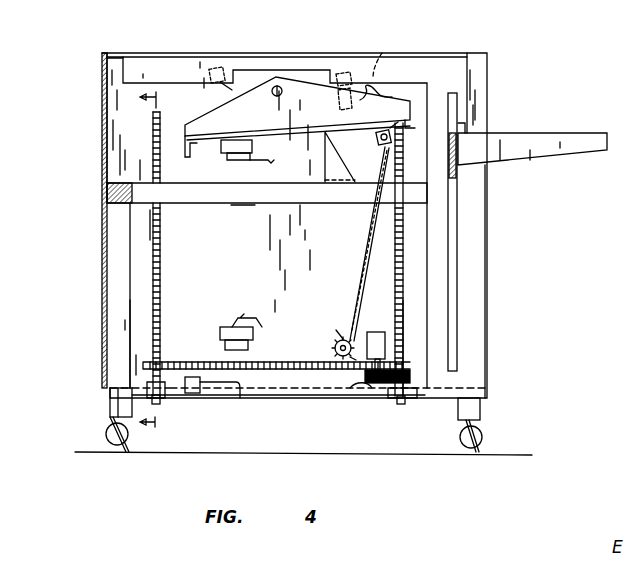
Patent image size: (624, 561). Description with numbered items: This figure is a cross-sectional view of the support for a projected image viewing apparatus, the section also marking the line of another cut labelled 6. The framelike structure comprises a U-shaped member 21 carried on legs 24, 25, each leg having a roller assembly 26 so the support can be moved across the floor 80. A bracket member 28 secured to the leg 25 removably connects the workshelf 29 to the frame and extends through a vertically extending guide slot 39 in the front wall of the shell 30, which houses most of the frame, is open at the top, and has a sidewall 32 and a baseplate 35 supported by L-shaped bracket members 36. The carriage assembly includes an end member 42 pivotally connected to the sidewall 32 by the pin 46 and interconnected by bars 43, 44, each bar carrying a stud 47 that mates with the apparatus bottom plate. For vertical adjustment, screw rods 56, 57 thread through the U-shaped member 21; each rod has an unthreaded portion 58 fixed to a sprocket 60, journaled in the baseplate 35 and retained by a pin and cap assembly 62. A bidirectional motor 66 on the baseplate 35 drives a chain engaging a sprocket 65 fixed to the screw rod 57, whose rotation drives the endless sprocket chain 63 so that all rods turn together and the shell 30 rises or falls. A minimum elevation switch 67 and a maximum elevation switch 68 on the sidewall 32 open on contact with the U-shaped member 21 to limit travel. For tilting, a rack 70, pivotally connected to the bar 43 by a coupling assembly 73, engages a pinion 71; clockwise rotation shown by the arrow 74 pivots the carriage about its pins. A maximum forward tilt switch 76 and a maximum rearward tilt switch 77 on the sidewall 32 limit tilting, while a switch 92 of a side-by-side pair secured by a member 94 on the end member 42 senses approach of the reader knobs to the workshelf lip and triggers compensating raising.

The shell 30 is at (101, 61).
The U-shaped member 21 is at (236, 193).
The sidewall 32 is at (254, 240).
The screw rod 56 is at (160, 260).
The screw rod 57 is at (404, 275).
The end member 42 is at (256, 117).
The bar 43 is at (412, 128).
The bar 44 is at (188, 150).
The pin 46 is at (277, 85).
The stud 47 is at (372, 88).
The minimum elevation switch 67 is at (252, 147).
The coupling assembly 73 is at (379, 140).
The member 94 is at (325, 164).
The maximum forward tilt switch 76 is at (216, 70).
The maximum rearward tilt switch 77 is at (340, 78).
The switch 92 is at (392, 56).
The workshelf 29 is at (533, 133).
The bracket member 28 is at (458, 165).
The guide slot 39 is at (453, 268).
The rack 70 is at (376, 242).
The arrow 74 is at (333, 355).
The pinion 71 is at (352, 330).
The bidirectional motor 66 is at (377, 333).
The sprocket 65 is at (412, 377).
The sprocket 60 is at (150, 366).
The maximum elevation switch 68 is at (218, 342).
The endless sprocket chain 63 is at (283, 366).
The L-shaped bracket member 36 is at (240, 398).
The baseplate 35 is at (282, 400).
The pin and cap assembly 62 is at (163, 397).
The unthreaded portion 58 is at (156, 404).
The leg 24 is at (110, 410).
The leg 25 is at (480, 412).
The roller assembly 26 is at (110, 436).
The floor 80 is at (507, 453).
The section line 6- 6 is at (155, 262).